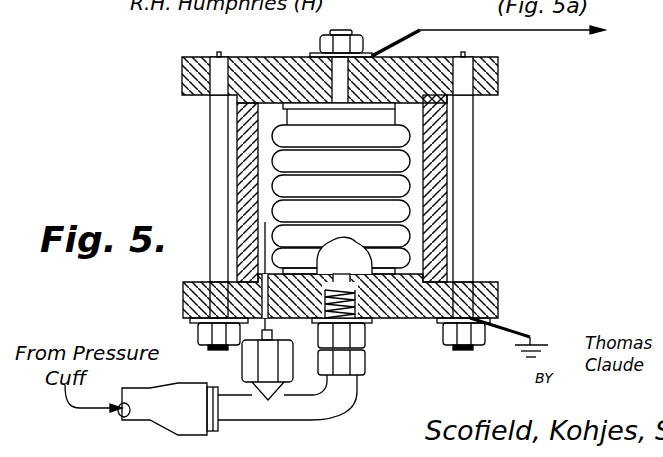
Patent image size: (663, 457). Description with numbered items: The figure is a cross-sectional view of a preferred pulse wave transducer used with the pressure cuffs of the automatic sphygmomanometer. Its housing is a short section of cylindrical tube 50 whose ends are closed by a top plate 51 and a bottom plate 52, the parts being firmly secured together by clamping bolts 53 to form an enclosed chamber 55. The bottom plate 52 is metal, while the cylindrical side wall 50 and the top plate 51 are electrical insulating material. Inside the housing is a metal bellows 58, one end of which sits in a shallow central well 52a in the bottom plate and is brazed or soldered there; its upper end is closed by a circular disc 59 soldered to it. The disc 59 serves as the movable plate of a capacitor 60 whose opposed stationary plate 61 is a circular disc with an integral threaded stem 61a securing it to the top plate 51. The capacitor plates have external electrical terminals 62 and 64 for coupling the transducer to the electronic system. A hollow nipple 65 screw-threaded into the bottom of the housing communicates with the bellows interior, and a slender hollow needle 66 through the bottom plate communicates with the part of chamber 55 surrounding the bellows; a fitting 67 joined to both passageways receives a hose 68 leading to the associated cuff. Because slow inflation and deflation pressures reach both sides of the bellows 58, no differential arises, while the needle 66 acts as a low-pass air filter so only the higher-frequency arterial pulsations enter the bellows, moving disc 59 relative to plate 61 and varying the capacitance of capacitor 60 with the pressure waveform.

The cylindrical tube 50 is at (435, 177).
The top plate 51 is at (498, 78).
The bottom plate 52 is at (520, 280).
The shallow central well 52a is at (368, 322).
The clamping bolts 53 is at (462, 237).
The enclosed chamber 55 is at (240, 176).
The metal bellows 58 is at (378, 193).
The circular disc 59 is at (333, 120).
The capacitor 60 is at (258, 118).
The stationary plate 61 is at (293, 88).
The threaded stem 61a is at (342, 32).
The external electrical terminal 62 is at (393, 44).
The external electrical terminal 64 is at (518, 334).
The hollow nipple 65 is at (365, 336).
The slender hollow needle 66 is at (262, 250).
The fitting 67 is at (312, 421).
The hose 68 is at (148, 416).